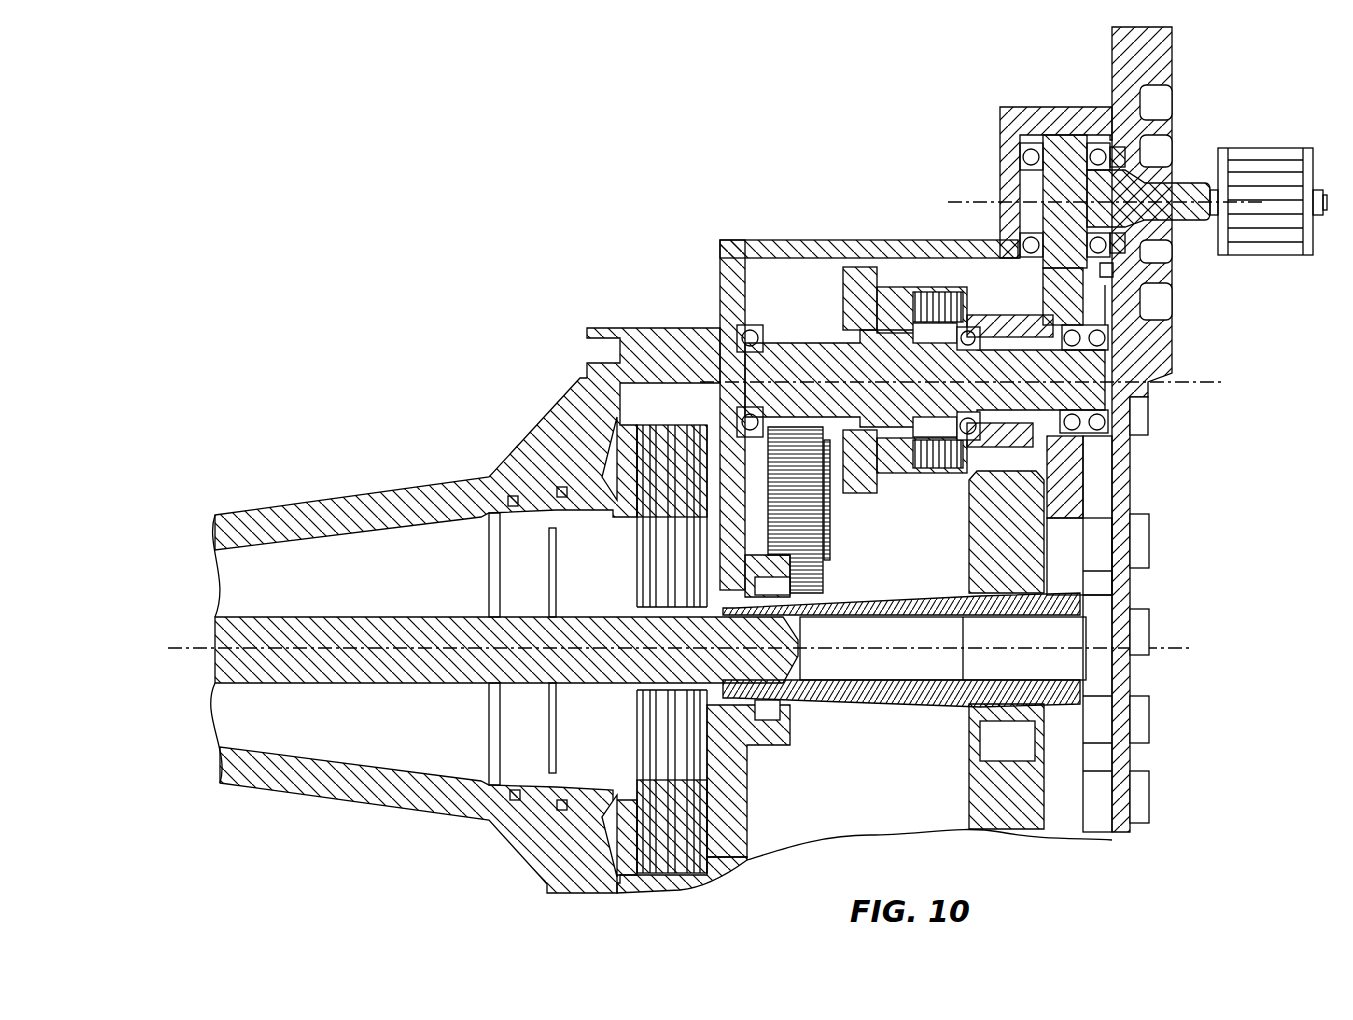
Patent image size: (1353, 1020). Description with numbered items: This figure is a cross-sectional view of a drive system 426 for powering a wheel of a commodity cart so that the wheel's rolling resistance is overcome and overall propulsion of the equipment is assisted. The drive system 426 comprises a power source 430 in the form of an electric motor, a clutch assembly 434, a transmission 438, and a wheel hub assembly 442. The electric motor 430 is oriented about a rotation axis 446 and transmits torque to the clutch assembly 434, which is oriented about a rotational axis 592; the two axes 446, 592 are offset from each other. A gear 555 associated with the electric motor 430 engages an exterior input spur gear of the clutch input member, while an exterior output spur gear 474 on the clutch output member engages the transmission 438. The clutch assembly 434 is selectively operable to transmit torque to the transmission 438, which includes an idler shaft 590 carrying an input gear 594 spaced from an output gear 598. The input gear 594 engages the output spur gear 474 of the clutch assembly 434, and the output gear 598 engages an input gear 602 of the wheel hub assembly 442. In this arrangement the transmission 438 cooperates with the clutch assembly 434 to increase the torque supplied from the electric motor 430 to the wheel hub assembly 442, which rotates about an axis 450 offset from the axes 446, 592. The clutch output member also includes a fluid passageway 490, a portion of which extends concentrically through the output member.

The drive system 426 is at (825, 108).
The power source 430 is at (1270, 160).
The clutch assembly 434 is at (898, 272).
The transmission 438 is at (1097, 467).
The wheel hub assembly 442 is at (1072, 550).
The rotation axis 446 is at (980, 200).
The axis 450 is at (205, 648).
The exterior output spur gear 474 is at (822, 328).
The fluid passageway 490 is at (1095, 400).
The gear 555 is at (1060, 125).
The idler shaft 590 is at (903, 493).
The rotational axis 592 is at (805, 373).
The input gear 594 is at (808, 527).
The output gear 598 is at (979, 461).
The input gear 602 is at (970, 815).